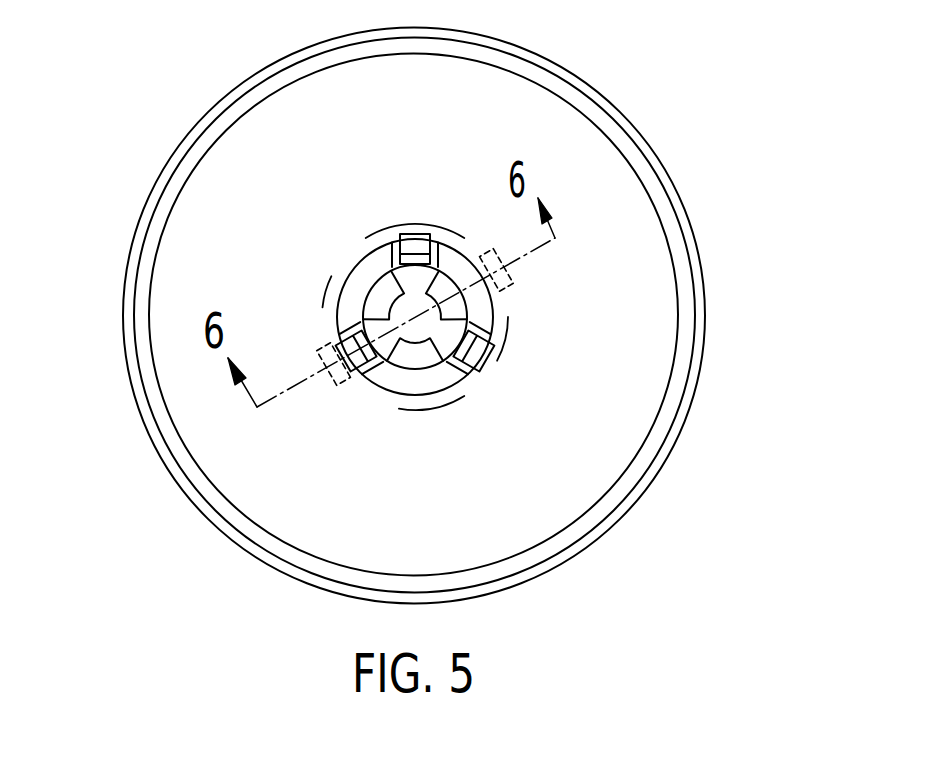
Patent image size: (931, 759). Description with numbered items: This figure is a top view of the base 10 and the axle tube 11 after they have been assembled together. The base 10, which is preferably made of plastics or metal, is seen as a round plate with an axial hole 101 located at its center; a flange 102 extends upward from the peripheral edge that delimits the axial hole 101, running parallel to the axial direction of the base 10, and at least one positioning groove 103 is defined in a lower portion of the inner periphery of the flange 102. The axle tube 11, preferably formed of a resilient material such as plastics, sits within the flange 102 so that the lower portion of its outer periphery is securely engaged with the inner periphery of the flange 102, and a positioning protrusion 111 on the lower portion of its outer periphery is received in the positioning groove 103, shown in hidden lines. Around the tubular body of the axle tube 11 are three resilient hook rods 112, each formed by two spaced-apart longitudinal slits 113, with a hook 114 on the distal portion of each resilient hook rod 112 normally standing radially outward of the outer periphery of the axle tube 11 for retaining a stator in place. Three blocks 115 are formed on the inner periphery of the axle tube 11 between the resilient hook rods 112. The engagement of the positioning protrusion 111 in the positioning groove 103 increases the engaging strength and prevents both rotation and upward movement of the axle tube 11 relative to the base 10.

The base 10 is at (635, 265).
The axle tube 11 is at (377, 260).
The axial hole 101 is at (385, 313).
The flange 102 is at (397, 397).
The positioning groove 103 is at (334, 364).
The positioning protrusion 111 is at (510, 285).
The resilient hook rod 112 is at (485, 375).
The longitudinal slit 113 is at (462, 365).
The hook 114 is at (480, 357).
The block 115 is at (382, 294).